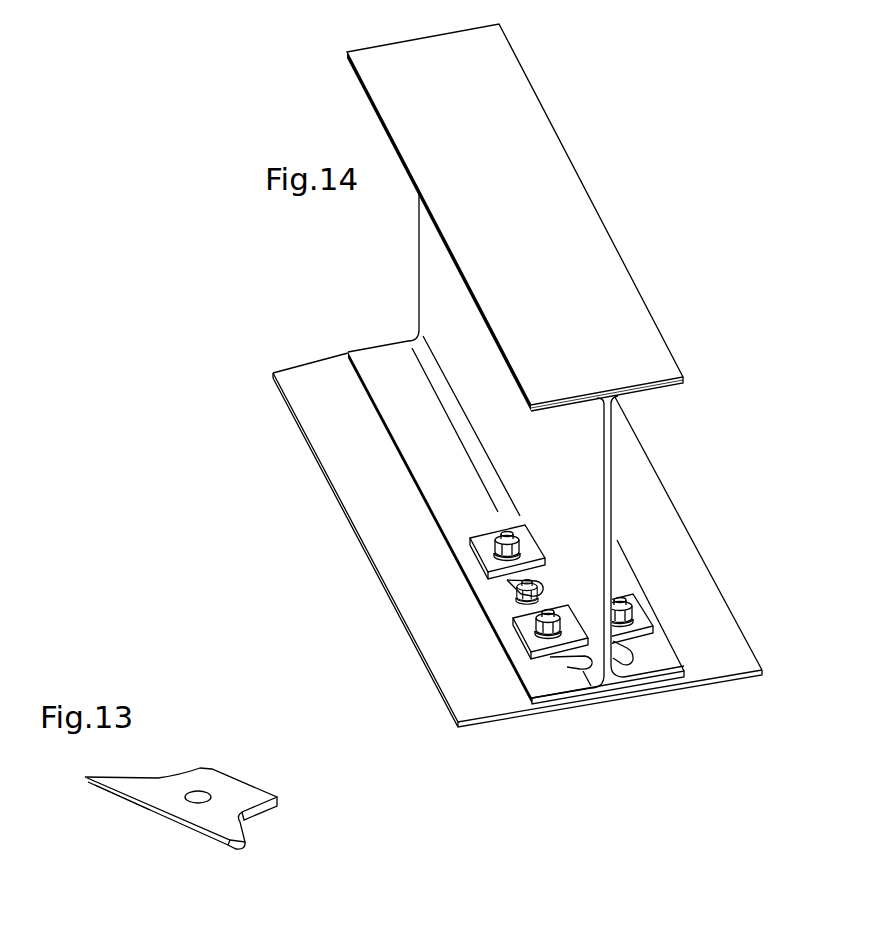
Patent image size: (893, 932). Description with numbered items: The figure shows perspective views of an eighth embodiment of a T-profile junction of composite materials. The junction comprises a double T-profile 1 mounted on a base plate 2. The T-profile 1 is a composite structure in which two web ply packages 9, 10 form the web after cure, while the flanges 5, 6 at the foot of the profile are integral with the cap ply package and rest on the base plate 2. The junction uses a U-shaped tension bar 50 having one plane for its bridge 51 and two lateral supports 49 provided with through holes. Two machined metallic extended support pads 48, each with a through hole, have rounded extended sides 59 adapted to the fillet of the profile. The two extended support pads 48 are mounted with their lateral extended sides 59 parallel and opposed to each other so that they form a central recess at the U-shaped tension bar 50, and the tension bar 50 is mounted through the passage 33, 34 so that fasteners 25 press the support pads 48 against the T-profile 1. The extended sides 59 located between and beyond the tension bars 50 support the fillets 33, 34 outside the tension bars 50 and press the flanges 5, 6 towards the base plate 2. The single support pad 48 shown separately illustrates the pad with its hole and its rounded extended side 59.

In FIG. 14, the double T-profile 1 is at (735, 338).
In FIG. 14, the base plate 2 is at (731, 648).
In FIG. 14, the flange 5 is at (687, 658).
In FIG. 14, the flange 6 is at (541, 687).
In FIG. 14, the web ply package 9 is at (612, 470).
In FIG. 14, the web ply package 10 is at (604, 450).
In FIG. 14, the fastener 25 is at (516, 616).
In FIG. 14, the passage 33 is at (632, 678).
In FIG. 14, the passage 34 is at (588, 683).
In FIG. 14, the extended support pad 48 is at (532, 573).
In FIG. 13, the extended support pad 48 is at (235, 758).
In FIG. 14, the lateral support 49 is at (481, 545).
In FIG. 14, the U-shaped tension bar 50 is at (484, 639).
In FIG. 14, the bridge 51 is at (507, 613).
In FIG. 13, the rounded extended side 59 is at (122, 798).